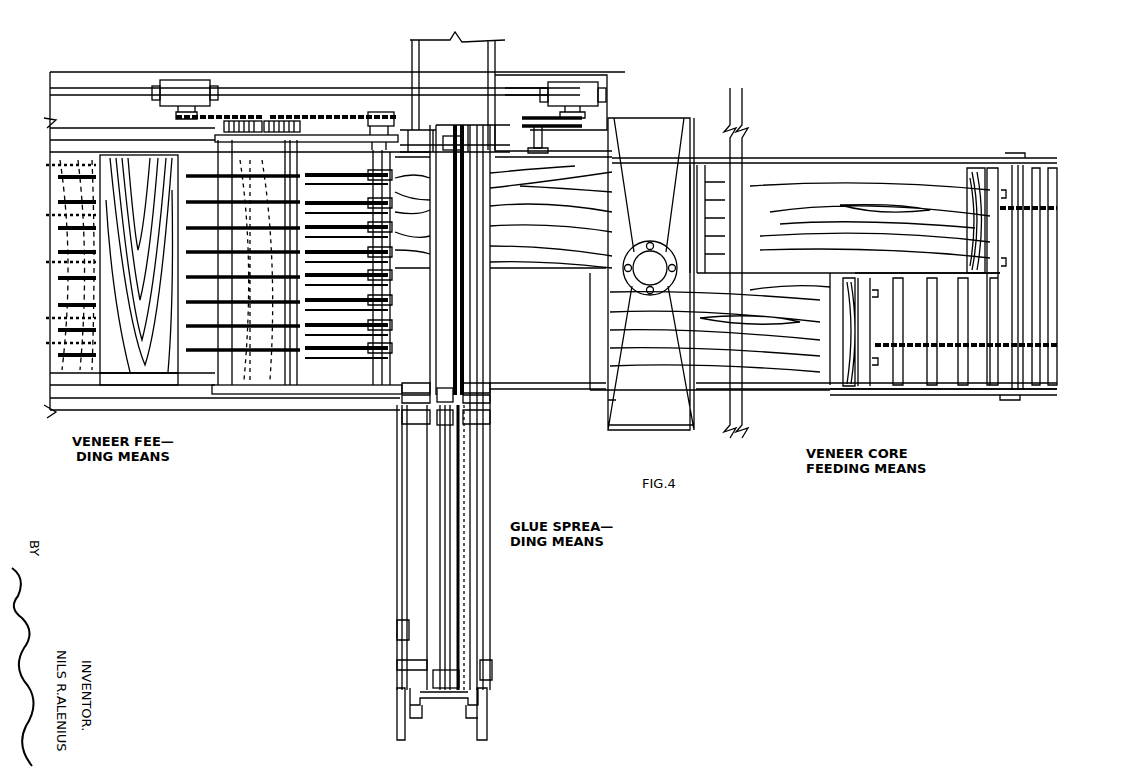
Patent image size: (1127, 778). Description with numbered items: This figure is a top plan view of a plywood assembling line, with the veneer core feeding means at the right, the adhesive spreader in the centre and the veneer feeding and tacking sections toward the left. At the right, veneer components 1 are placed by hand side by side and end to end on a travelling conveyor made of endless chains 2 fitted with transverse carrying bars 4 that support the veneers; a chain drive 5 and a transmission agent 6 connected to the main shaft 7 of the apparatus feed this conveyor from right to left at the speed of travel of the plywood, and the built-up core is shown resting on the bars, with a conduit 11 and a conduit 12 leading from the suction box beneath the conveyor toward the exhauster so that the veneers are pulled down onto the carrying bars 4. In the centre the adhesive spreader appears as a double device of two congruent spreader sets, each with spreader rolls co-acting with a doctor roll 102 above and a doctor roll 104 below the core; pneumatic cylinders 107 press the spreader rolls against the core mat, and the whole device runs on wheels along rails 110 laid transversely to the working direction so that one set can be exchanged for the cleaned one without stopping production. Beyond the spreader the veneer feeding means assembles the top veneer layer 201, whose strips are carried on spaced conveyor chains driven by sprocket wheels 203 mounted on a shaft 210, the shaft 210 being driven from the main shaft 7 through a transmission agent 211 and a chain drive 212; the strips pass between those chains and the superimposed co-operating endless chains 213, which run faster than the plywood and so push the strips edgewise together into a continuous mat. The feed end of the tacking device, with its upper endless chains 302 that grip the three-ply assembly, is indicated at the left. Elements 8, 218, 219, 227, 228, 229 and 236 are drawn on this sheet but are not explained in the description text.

The veneer components 1 is at (775, 186).
The endless chains 2 is at (1046, 208).
The transverse carrying bars 4 is at (1056, 242).
The chain drive 5 is at (556, 124).
The transmission agent 6 is at (582, 92).
The main shaft 7 is at (522, 94).
The veneer core stack 8 is at (990, 178).
The conduit 11 is at (620, 402).
The conduit 12 is at (652, 135).
The doctor roll 102 is at (472, 516).
The doctor roll 104 is at (416, 508).
The pneumatic cylinders 107 is at (450, 140).
The rails 110 is at (398, 702).
The top veneer layer 201 is at (130, 178).
The sprocket wheels 203 is at (90, 360).
The shaft 210 is at (240, 387).
The transmission agent 211 is at (168, 90).
The chain drive 212 is at (232, 115).
The endless chains 213 is at (195, 368).
The plate 218 is at (352, 140).
The bottom plate 219 is at (286, 390).
The chain 227 is at (310, 116).
The gear 228 is at (245, 122).
The gear 229 is at (278, 122).
The feed roller 236 is at (372, 368).
The endless chains 302 is at (50, 375).